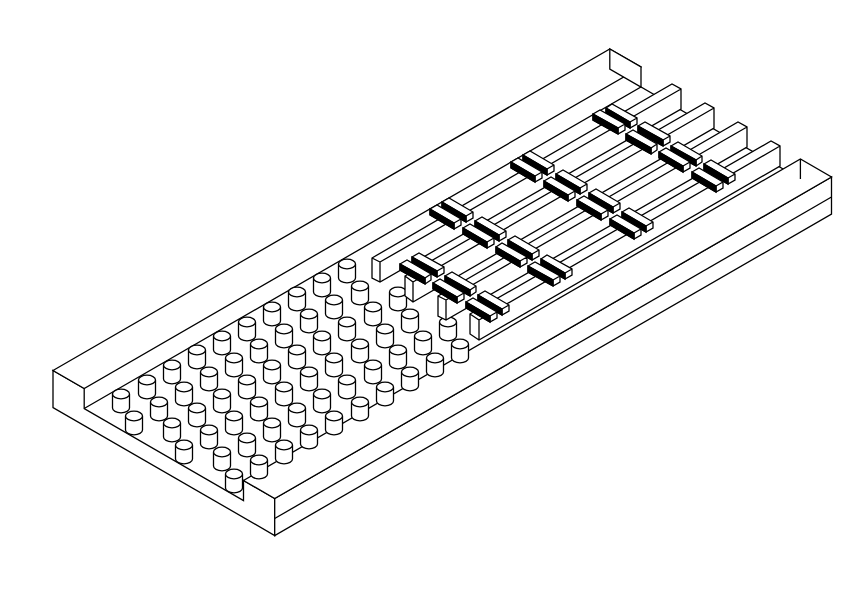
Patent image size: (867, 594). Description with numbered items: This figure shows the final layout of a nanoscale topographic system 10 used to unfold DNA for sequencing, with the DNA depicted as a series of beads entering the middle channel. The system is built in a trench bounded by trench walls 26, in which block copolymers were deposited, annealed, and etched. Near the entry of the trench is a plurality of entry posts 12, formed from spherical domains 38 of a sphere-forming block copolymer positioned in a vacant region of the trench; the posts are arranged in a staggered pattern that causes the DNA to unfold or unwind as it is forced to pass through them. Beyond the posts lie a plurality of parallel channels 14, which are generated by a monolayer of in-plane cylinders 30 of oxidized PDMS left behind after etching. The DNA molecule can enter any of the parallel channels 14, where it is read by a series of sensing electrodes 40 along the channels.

The nanoscale topographic system 10 is at (212, 106).
The entry posts 12 is at (291, 362).
The spherical domains 38 is at (201, 341).
The parallel channels 14 is at (603, 233).
The trench walls 26 is at (101, 403).
The in-plane cylinders 30 is at (576, 182).
The sensing electrodes 40 is at (458, 186).